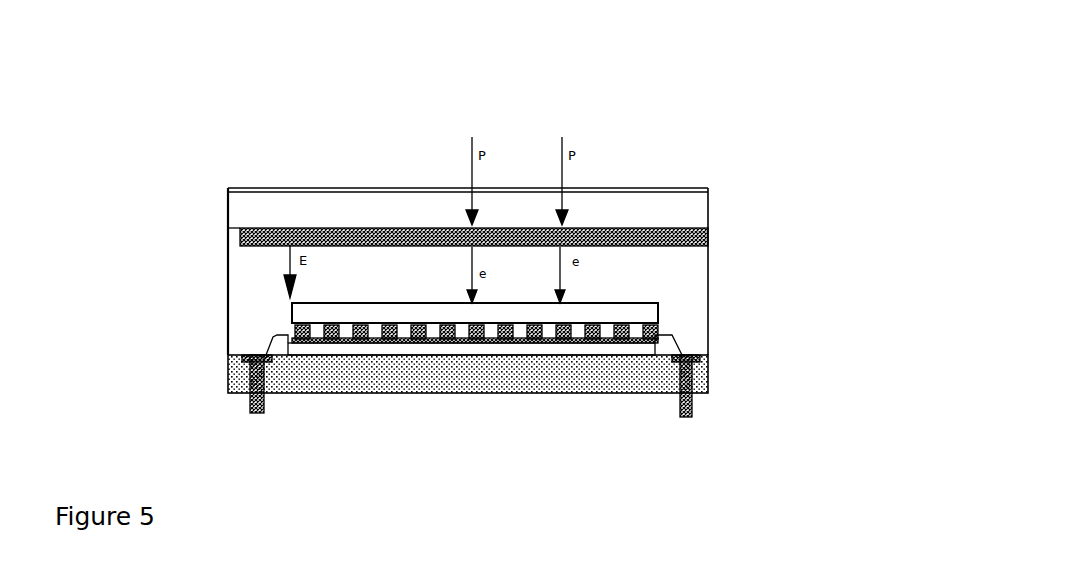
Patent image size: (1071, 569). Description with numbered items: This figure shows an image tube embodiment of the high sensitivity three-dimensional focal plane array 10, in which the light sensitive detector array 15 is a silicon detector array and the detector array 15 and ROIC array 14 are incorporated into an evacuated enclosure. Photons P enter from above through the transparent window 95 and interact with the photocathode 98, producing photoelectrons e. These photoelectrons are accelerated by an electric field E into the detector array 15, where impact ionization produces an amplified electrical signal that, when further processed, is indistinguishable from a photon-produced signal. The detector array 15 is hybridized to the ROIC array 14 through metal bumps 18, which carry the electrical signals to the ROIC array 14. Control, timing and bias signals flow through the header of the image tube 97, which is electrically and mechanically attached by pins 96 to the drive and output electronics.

The focal plane array 10 is at (650, 158).
The transparent window 95 is at (228, 195).
The photocathode 98 is at (252, 245).
The header of the image tube 97 is at (703, 375).
The pins 96 is at (690, 408).
The ROIC array 14 is at (453, 352).
The metal bumps 18 is at (628, 330).
The detector array 15 is at (613, 303).